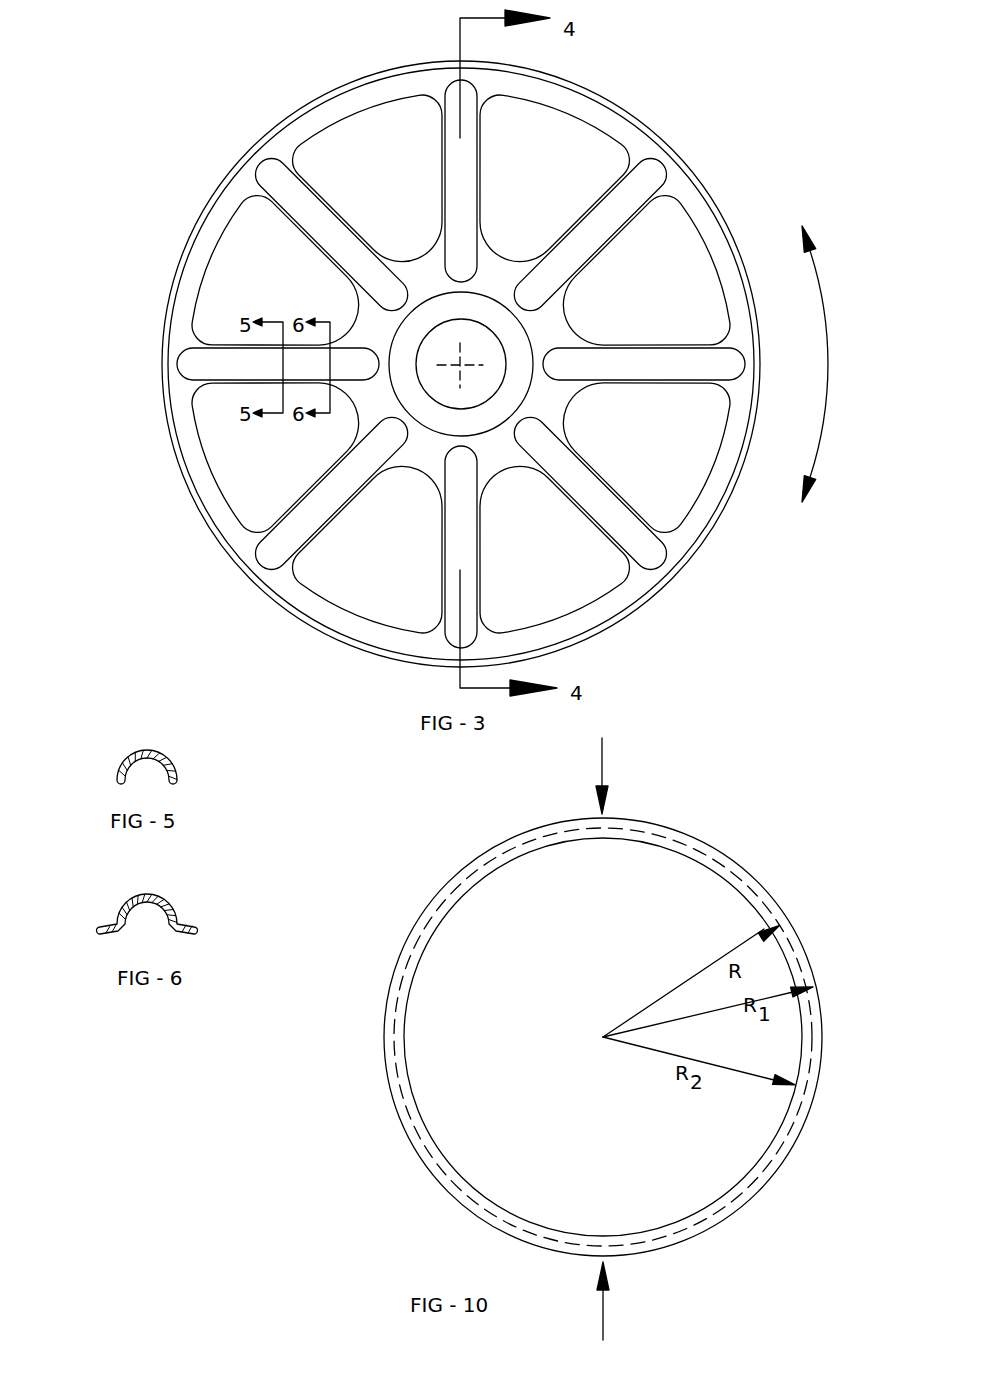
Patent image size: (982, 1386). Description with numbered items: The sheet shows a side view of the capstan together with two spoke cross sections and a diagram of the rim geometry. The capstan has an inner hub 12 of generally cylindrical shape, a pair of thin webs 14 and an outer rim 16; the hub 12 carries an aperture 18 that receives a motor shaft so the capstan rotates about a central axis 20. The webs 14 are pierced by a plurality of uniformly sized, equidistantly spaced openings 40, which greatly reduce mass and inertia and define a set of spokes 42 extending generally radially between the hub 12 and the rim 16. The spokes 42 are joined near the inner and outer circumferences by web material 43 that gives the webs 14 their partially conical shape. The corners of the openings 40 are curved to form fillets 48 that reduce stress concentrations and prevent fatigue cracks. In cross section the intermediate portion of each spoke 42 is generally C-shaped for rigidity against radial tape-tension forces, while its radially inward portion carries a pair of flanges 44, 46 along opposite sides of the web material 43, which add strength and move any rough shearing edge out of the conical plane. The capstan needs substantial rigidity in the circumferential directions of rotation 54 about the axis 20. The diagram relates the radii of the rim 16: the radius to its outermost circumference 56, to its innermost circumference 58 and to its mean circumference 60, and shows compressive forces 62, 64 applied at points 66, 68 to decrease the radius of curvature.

In FIG. 3, the inner hub 12 is at (525, 347).
In FIG. 3, the webs 14 is at (666, 574).
In FIG. 3, the outer rim 16 is at (598, 632).
In FIG. 10, the outer rim 16 is at (627, 1037).
In FIG. 3, the aperture 18 is at (470, 338).
In FIG. 3, the central axis 20 is at (463, 370).
In FIG. 3, the openings 40 is at (347, 145).
In FIG. 3, the spokes 42 is at (205, 362).
In FIG. 5, the spokes 42 is at (158, 750).
In FIG. 6, the spokes 42 is at (152, 900).
In FIG. 3, the web material 43 is at (548, 405).
In FIG. 6, the web material 43 is at (110, 913).
In FIG. 6, the flange 44 is at (97, 935).
In FIG. 6, the flange 46 is at (193, 936).
In FIG. 3, the fillets 48 is at (417, 458).
In FIG. 3, the circumferential directions of rotation 54 is at (826, 346).
In FIG. 10, the outermost circumference 56 is at (790, 1147).
In FIG. 10, the innermost circumference 58 is at (743, 1180).
In FIG. 10, the mean circumference 60 is at (757, 1183).
In FIG. 10, the compressive force 62 is at (605, 772).
In FIG. 10, the compressive force 64 is at (605, 1316).
In FIG. 10, the point 66 is at (822, 1042).
In FIG. 10, the point 68 is at (384, 1046).